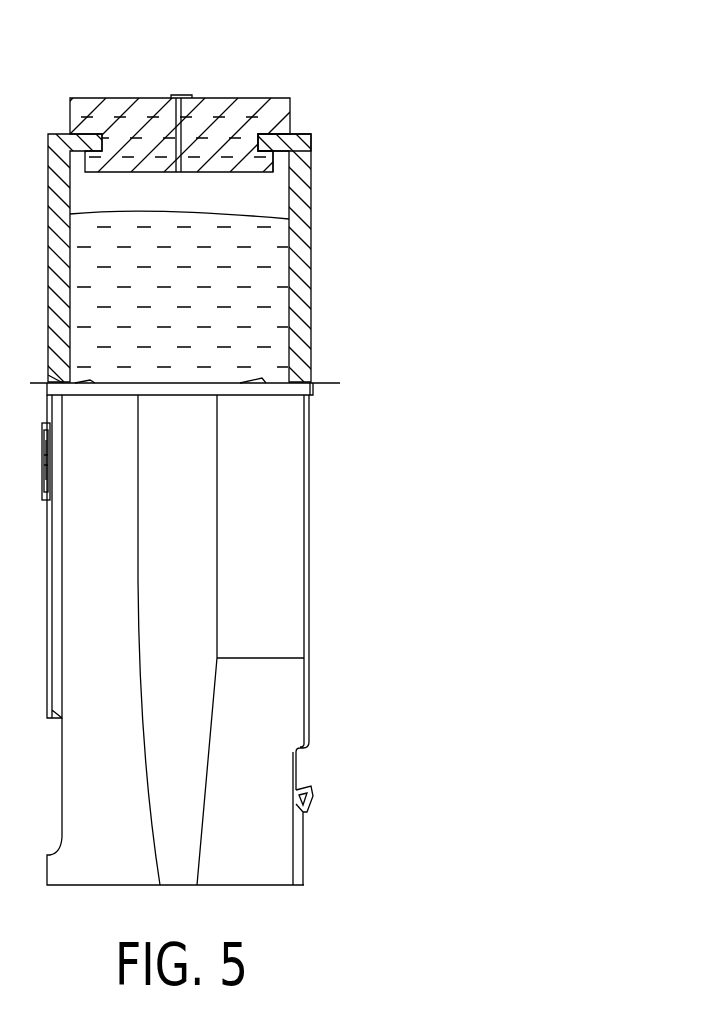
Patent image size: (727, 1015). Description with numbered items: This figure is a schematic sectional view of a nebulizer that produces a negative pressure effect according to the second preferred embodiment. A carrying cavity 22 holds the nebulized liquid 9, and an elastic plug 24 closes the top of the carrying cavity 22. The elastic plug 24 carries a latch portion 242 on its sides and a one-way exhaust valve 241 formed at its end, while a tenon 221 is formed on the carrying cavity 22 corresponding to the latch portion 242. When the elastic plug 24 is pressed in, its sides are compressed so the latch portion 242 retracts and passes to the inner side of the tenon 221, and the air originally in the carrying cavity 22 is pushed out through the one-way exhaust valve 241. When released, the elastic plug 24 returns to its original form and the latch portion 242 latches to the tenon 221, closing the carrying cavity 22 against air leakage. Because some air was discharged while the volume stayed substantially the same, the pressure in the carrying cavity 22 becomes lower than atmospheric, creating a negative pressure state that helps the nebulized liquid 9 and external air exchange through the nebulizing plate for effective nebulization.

The carrying cavity 22 is at (305, 264).
The tenon 221 is at (295, 144).
The elastic plug 24 is at (262, 105).
The one-way exhaust valve 241 is at (181, 95).
The latch portion 242 is at (275, 165).
The nebulized liquid 9 is at (265, 321).